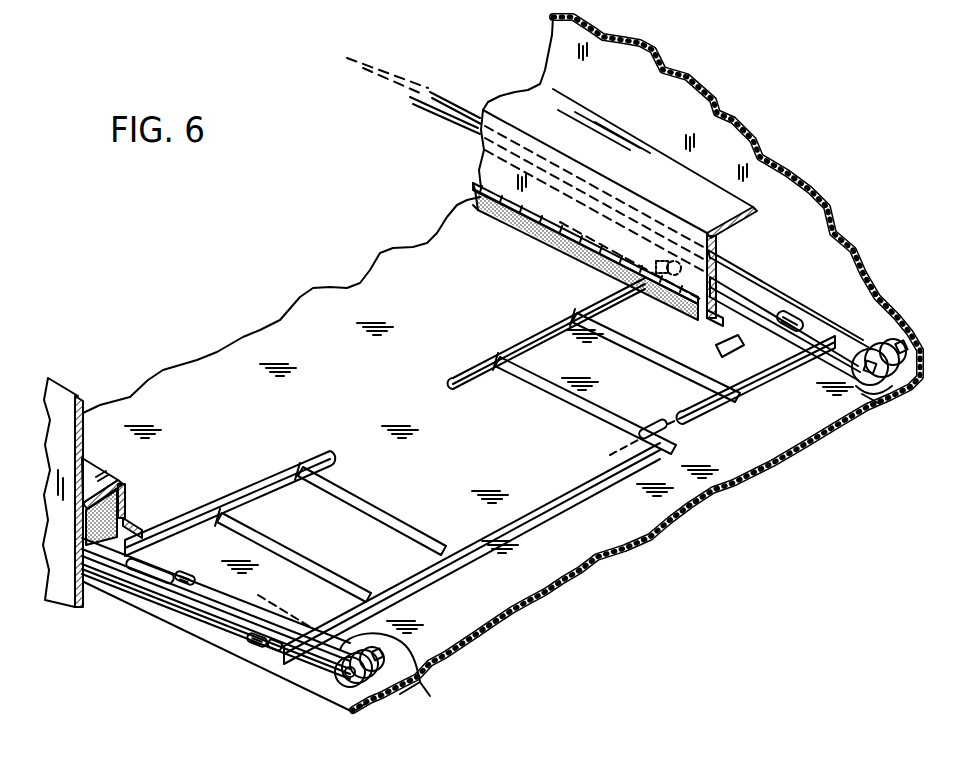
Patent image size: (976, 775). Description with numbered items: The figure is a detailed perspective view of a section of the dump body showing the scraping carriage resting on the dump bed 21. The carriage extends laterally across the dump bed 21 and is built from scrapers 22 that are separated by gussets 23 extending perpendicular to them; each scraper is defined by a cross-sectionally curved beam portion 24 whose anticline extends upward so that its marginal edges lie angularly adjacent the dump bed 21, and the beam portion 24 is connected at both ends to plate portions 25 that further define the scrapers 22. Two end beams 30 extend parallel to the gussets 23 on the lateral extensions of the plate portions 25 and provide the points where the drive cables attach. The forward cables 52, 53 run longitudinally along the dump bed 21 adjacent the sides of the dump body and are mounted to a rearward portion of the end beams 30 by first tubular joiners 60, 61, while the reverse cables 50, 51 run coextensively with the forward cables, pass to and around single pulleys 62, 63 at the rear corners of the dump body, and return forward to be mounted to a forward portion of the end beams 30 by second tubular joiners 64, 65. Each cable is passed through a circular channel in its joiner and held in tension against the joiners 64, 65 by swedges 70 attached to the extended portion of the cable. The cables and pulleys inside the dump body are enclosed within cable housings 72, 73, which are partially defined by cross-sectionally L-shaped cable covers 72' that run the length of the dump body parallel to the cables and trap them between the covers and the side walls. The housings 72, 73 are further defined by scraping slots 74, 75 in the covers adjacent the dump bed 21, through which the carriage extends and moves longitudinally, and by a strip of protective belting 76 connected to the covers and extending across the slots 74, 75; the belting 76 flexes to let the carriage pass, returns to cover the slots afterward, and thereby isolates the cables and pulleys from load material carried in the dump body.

The dump bed 21 is at (312, 323).
The scrapers 22 is at (512, 331).
The gussets 23 is at (527, 442).
The curved beam portion 24 is at (717, 420).
The plate portions 25 is at (784, 360).
The end beams 30 is at (748, 336).
The reverse cable 50 is at (887, 283).
The reverse cable 51 is at (432, 688).
The forward cable 52 is at (773, 290).
The forward cable 53 is at (217, 613).
The first tubular joiner 60 is at (840, 326).
The first tubular joiner 61 is at (250, 645).
The single pulley 62 is at (883, 397).
The single pulley 63 is at (343, 695).
The second tubular joiner 64 is at (585, 251).
The second tubular joiner 65 is at (183, 587).
The swedges 70 is at (150, 580).
The cable housing 72 is at (535, 171).
The cable cover 72' is at (655, 140).
The cable housing 73 is at (102, 466).
The scraping slot 74 is at (520, 222).
The scraping slot 75 is at (140, 535).
The protective belting 76 is at (575, 250).